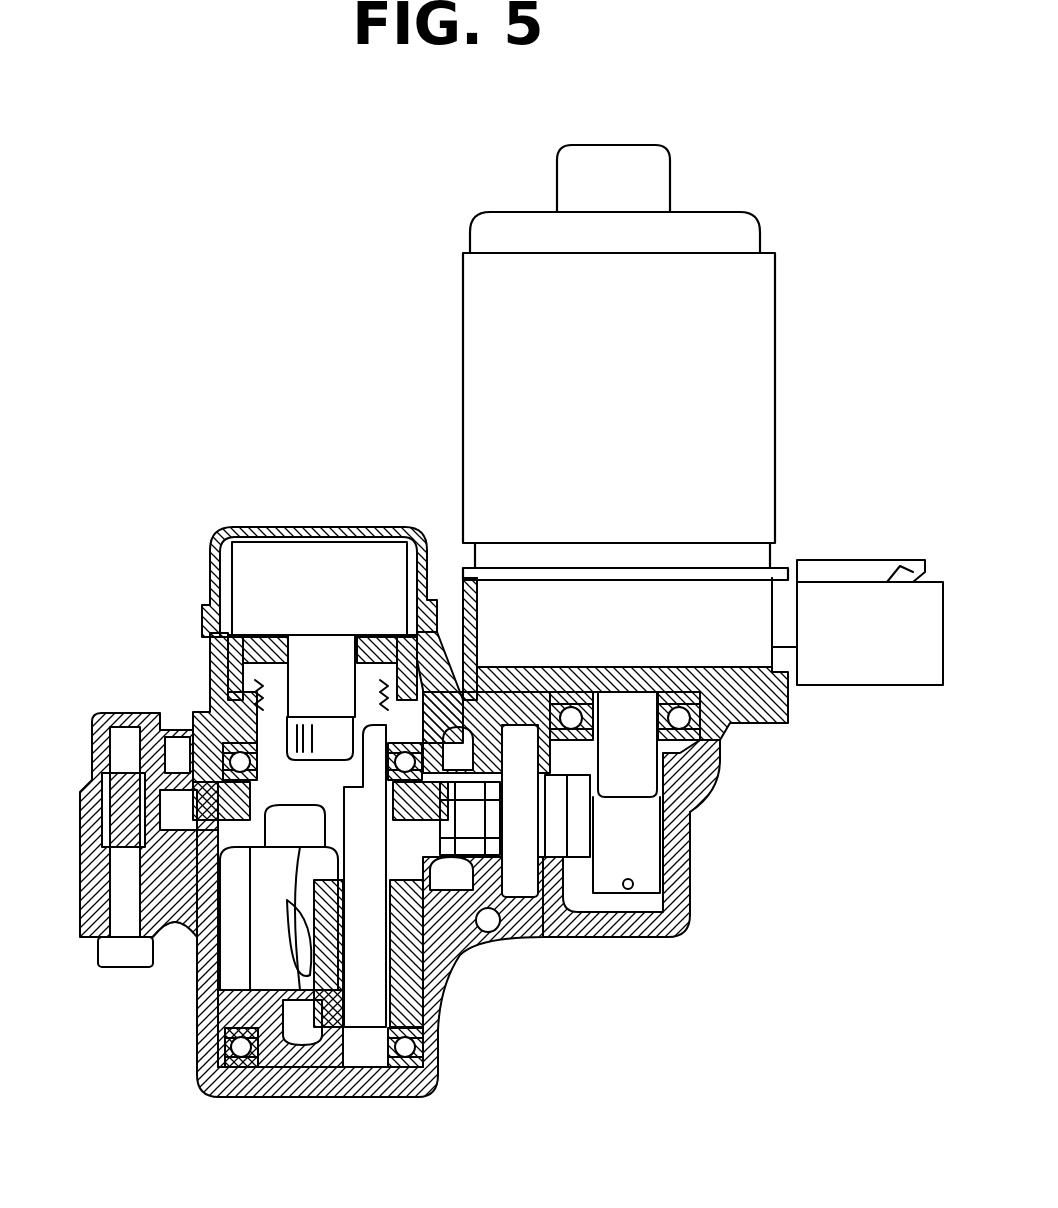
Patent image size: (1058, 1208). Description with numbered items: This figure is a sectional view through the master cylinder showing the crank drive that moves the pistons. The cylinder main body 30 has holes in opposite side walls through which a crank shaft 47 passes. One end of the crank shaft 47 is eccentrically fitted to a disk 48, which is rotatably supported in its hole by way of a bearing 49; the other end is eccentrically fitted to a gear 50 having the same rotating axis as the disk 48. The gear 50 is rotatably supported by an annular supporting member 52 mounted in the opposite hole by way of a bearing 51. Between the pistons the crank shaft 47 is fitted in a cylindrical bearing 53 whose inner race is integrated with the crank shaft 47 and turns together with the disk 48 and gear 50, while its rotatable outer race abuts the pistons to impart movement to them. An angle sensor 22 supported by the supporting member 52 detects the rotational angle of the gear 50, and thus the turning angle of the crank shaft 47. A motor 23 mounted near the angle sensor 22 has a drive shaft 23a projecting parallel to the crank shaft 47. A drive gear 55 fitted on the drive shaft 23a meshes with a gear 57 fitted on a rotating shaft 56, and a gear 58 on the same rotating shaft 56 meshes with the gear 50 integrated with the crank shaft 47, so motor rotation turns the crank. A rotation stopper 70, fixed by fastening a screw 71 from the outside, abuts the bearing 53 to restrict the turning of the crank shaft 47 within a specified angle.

The angle sensor 22 is at (318, 568).
The motor 23 is at (775, 348).
The drive shaft 23a is at (632, 875).
The cylinder main body 30 is at (567, 940).
The crank shaft 47 is at (370, 1010).
The disk 48 is at (292, 1057).
The bearing 49 is at (240, 1052).
The gear 50 is at (158, 713).
The bearing 51 is at (440, 690).
The annular supporting member 52 is at (180, 713).
The bearing 53 is at (447, 1060).
The drive gear 55 is at (667, 878).
The rotating shaft 56 is at (540, 937).
The gear 57 is at (467, 935).
The gear 58 is at (598, 798).
The rotation stopper 70 is at (242, 1002).
The screw 71 is at (238, 927).